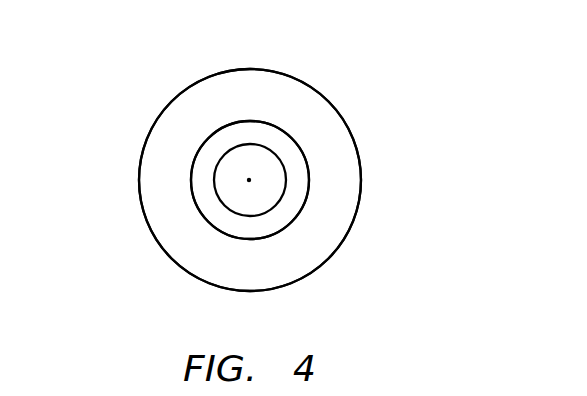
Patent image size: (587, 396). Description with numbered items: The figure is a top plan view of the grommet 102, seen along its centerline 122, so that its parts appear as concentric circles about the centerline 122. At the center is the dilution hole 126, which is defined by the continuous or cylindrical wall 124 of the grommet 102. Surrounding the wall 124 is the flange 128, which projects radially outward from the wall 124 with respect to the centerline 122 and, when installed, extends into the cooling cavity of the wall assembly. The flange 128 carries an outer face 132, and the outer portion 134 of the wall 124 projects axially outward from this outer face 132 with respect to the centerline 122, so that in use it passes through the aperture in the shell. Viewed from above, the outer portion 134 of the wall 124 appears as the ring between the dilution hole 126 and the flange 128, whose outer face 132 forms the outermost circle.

The grommet 102 is at (393, 98).
The centerline 122 is at (249, 180).
The cylindrical wall 124 is at (198, 184).
The dilution hole 126 is at (231, 196).
The flange 128 is at (175, 128).
The outer face 132 is at (302, 100).
The outer portion 134 is at (226, 139).